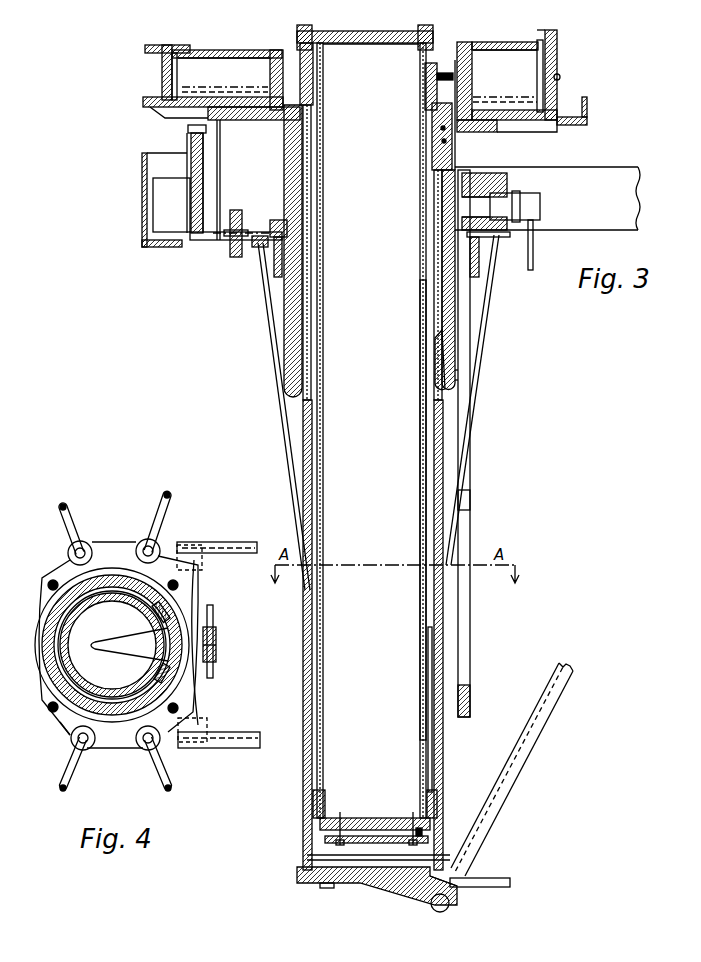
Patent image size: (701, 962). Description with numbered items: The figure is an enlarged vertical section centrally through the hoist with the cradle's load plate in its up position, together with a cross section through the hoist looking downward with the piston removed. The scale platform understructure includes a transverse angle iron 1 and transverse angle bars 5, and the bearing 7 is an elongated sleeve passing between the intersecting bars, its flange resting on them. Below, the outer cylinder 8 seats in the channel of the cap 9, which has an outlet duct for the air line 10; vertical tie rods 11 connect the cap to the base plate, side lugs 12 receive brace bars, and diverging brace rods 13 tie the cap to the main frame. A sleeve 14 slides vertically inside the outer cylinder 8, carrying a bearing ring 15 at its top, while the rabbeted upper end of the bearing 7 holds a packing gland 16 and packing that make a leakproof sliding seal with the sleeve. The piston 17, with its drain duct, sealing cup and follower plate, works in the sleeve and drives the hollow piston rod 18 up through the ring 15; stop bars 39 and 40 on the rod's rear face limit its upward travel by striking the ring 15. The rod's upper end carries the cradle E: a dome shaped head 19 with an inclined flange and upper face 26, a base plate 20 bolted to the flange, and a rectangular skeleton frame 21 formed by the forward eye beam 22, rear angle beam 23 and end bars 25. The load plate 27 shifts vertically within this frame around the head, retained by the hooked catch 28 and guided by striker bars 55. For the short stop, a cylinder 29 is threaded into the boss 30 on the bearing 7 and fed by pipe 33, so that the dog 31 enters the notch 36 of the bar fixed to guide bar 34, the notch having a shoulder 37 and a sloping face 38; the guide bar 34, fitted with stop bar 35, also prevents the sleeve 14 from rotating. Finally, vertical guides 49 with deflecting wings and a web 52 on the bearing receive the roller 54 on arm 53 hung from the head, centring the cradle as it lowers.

In FIG. 3, the transverse angle iron 1 is at (142, 200).
In FIG. 3, the transverse angle bar 5 is at (264, 272).
In FIG. 3, the bearing 7 is at (284, 153).
In FIG. 3, the outer cylinder 8 is at (302, 522).
In FIG. 4, the outer cylinder 8 is at (170, 602).
In FIG. 4, the cap 9 is at (115, 546).
In FIG. 3, the air line 10 is at (497, 879).
In FIG. 3, the vertical tie rods 11 is at (326, 888).
In FIG. 4, the vertical tie rods 11 is at (52, 581).
In FIG. 3, the side lugs 12 is at (446, 908).
In FIG. 4, the side lugs 12 is at (203, 562).
In FIG. 3, the brace rods 13 is at (288, 466).
In FIG. 4, the brace rods 13 is at (70, 513).
In FIG. 3, the sleeve 14 is at (324, 527).
In FIG. 4, the sleeve 14 is at (125, 585).
In FIG. 3, the bearing ring 15 is at (428, 88).
In FIG. 3, the packing gland 16 is at (437, 113).
In FIG. 3, the piston 17 is at (374, 819).
In FIG. 3, the piston rod 18 is at (421, 296).
In FIG. 4, the piston rod 18 is at (68, 620).
In FIG. 3, the dome shaped head 19 is at (299, 47).
In FIG. 3, the base plate 20 is at (147, 104).
In FIG. 3, the skeleton frame 21 is at (162, 74).
In FIG. 3, the forward transverse eye beam 22 is at (147, 50).
In FIG. 3, the rearward transverse angle beam 23 is at (541, 58).
In FIG. 3, the end bar 25 is at (212, 64).
In FIG. 3, the upper face 26 is at (458, 44).
In FIG. 3, the load plate or pan 27 is at (182, 92).
In FIG. 3, the hooked shaped catch 28 is at (587, 106).
In FIG. 3, the short cylinder 29 is at (541, 208).
In FIG. 3, the boss 30 is at (482, 182).
In FIG. 3, the dog or stop 31 is at (472, 205).
In FIG. 3, the pipe 33 is at (532, 232).
In FIG. 3, the guide bar 34 is at (447, 258).
In FIG. 4, the guide bar 34 is at (216, 633).
In FIG. 3, the detachable stop bar 35 is at (471, 702).
In FIG. 4, the detachable stop bar 35 is at (213, 680).
In FIG. 3, the notch 36 is at (456, 372).
In FIG. 3, the right angled shoulder 37 is at (456, 380).
In FIG. 3, the sloping face 38 is at (458, 360).
In FIG. 3, the stop bar 39 is at (428, 670).
In FIG. 4, the stop bar 39 is at (158, 617).
In FIG. 4, the stop bar 40 is at (158, 680).
In FIG. 3, the vertical guide 49 is at (199, 206).
In FIG. 3, the web 52 is at (196, 190).
In FIG. 3, the vertical arm 53 is at (202, 162).
In FIG. 3, the roller 54 is at (233, 252).
In FIG. 3, the striker or rubbing bars 55 is at (171, 64).
In FIG. 3, the cradle E is at (478, 42).